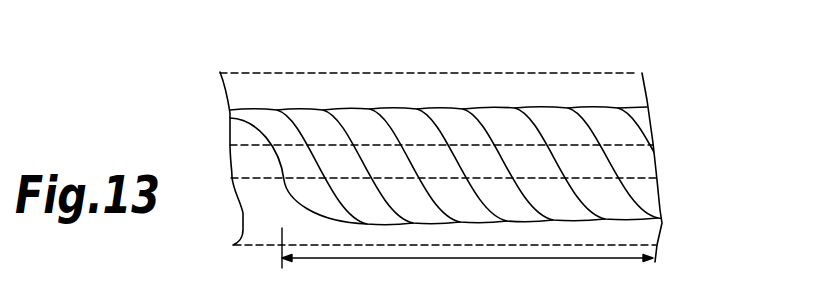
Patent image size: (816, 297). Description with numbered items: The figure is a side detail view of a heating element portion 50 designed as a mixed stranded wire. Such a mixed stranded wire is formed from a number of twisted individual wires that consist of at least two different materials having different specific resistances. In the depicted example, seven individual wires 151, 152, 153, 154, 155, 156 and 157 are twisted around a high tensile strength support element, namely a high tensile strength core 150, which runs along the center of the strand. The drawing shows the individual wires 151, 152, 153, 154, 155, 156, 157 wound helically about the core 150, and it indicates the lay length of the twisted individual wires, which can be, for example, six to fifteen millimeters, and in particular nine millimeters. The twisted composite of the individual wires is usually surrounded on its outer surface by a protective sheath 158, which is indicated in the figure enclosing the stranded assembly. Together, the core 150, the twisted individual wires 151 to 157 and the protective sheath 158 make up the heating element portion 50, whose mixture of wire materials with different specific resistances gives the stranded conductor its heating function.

The heating element portion 50 is at (447, 154).
The high tensile strength core 150 is at (247, 162).
The individual wire 151 is at (258, 118).
The individual wire 152 is at (307, 120).
The individual wire 153 is at (363, 120).
The individual wire 154 is at (405, 118).
The individual wire 155 is at (445, 117).
The individual wire 156 is at (503, 119).
The individual wire 157 is at (562, 122).
The protective sheath 158 is at (637, 230).